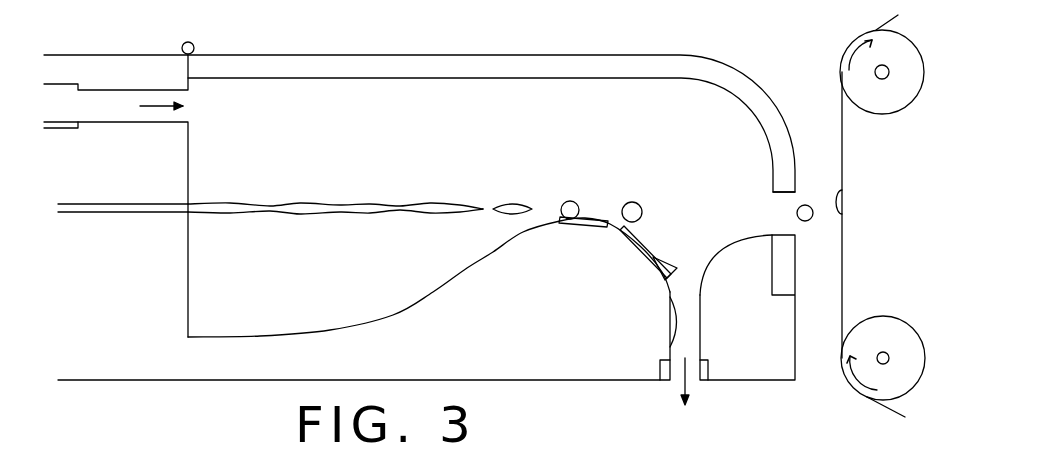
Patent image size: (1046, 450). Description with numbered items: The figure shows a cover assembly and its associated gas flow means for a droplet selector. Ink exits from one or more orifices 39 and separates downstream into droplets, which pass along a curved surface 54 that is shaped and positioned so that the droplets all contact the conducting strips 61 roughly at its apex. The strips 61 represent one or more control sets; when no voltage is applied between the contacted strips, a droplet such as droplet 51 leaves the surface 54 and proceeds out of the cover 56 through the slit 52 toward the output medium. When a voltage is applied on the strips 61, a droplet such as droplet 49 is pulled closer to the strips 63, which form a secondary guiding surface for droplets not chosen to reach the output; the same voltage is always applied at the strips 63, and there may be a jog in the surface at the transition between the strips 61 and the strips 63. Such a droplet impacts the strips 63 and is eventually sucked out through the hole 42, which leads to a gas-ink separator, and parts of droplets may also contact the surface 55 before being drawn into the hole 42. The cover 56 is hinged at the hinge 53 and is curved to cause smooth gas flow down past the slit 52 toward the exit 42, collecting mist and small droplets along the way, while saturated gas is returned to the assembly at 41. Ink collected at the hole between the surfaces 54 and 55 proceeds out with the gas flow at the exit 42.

The orifices 39 is at (190, 208).
The gas return 41 is at (139, 106).
The hole 42 is at (705, 386).
The droplet 49 is at (664, 268).
The droplet 51 is at (808, 203).
The slit 52 is at (780, 208).
The hinge 53 is at (199, 47).
The surface 54 is at (487, 262).
The surface 55 is at (742, 275).
The cover 56 is at (525, 65).
The conducting strips 61 is at (598, 229).
The strips 63 is at (647, 258).